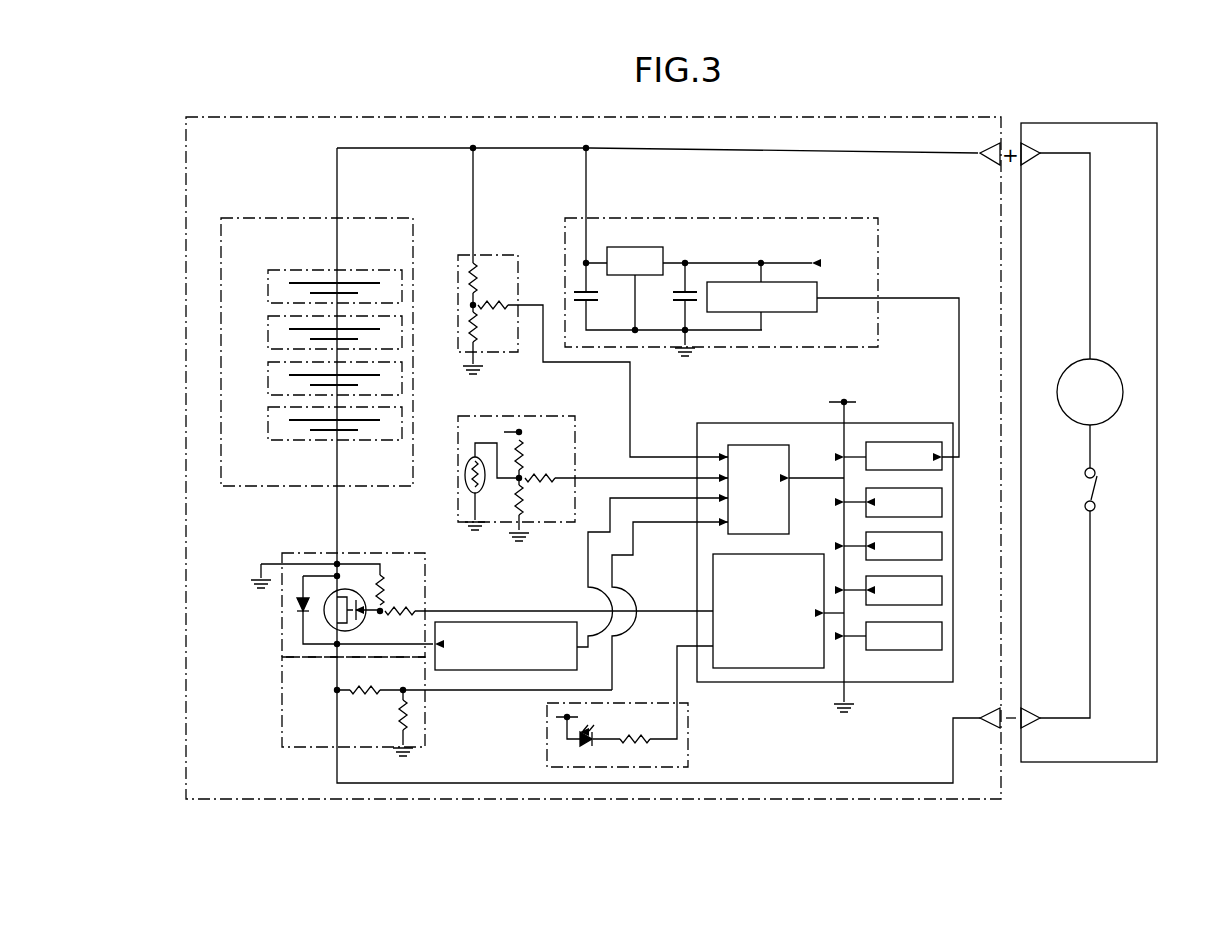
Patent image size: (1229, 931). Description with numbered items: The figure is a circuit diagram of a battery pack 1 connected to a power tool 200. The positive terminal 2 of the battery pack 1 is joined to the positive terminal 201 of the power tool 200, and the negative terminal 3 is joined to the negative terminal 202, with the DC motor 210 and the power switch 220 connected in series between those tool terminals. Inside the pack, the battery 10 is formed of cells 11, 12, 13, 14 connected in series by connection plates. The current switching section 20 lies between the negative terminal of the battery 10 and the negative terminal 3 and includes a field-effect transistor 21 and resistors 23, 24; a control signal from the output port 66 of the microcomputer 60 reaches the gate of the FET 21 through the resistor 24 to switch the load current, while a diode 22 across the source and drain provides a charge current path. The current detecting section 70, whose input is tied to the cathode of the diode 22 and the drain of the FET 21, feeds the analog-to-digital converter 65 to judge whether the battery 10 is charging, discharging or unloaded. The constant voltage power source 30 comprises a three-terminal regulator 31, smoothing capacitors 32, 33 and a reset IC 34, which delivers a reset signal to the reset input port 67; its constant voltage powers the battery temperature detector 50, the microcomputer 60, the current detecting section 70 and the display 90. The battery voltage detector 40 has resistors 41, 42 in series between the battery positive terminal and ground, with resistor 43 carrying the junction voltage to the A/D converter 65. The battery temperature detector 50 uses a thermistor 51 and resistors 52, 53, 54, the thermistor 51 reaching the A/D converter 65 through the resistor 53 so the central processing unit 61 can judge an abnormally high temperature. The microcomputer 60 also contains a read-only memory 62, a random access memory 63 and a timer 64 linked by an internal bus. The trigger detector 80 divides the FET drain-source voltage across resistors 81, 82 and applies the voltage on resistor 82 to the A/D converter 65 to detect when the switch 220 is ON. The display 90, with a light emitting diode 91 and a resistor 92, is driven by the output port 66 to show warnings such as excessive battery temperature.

The battery pack 1 is at (186, 158).
The positive terminal 2 is at (986, 167).
The negative terminal 3 is at (993, 730).
The battery 10 is at (255, 217).
The cell 11 is at (268, 290).
The cell 12 is at (268, 336).
The cell 13 is at (268, 382).
The cell 14 is at (268, 427).
The current switching section 20 is at (441, 572).
The field-effect transistor 21 is at (372, 623).
The diode 22 is at (297, 604).
The resistor 23 is at (385, 590).
The resistor 24 is at (418, 609).
The constant voltage power source 30 is at (747, 217).
The three-terminal regulator 31 is at (663, 249).
The smoothing capacitor 32 is at (598, 298).
The smoothing capacitor 33 is at (675, 297).
The reset IC 34 is at (770, 313).
The battery voltage detector 40 is at (506, 255).
The resistor 41 is at (488, 277).
The resistor 42 is at (475, 329).
The resistor 43 is at (488, 305).
The battery temperature detector 50 is at (533, 415).
The thermistor 51 is at (478, 491).
The resistor 52 is at (523, 434).
The resistor 53 is at (536, 471).
The resistor 54 is at (531, 501).
The microcomputer 60 is at (898, 423).
The central processing unit 61 is at (942, 590).
The read-only memory 62 is at (942, 636).
The random access memory 63 is at (942, 502).
The timer 64 is at (942, 546).
The analog-to-digital converter 65 is at (750, 443).
The output port 66 is at (713, 568).
The reset input port 67 is at (942, 468).
The current detecting section 70 is at (576, 665).
The trigger detector 80 is at (441, 724).
The resistor 81 is at (368, 698).
The resistor 82 is at (400, 722).
The display 90 is at (703, 728).
The light emitting diode 91 is at (586, 746).
The resistor 92 is at (640, 745).
The power tool 200 is at (1157, 151).
The positive terminal 201 is at (1036, 166).
The negative terminal 202 is at (1041, 728).
The DC motor 210 is at (1098, 361).
The power switch 220 is at (1101, 480).